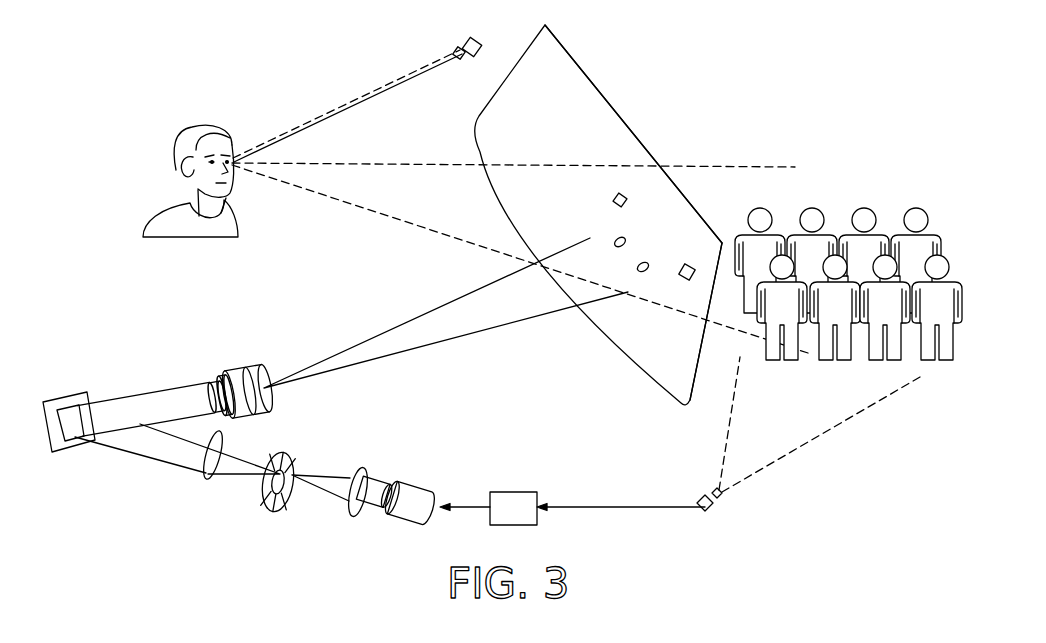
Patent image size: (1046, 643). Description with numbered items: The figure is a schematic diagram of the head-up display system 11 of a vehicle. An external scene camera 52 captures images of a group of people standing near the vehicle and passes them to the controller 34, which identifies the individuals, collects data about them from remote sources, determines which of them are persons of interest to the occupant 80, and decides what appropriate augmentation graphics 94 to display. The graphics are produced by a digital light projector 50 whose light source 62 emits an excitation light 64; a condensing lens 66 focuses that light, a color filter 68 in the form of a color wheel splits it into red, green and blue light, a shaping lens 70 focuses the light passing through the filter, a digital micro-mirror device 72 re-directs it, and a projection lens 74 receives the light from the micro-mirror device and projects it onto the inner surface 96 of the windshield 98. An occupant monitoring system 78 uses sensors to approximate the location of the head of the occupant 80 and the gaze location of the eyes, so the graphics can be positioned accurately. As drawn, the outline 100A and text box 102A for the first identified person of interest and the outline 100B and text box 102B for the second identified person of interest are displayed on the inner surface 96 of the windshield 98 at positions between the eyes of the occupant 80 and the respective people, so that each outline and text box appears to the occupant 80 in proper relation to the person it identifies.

The head-up display system 11 is at (117, 513).
The controller 34 is at (572, 508).
The digital light projector 50 is at (212, 492).
The external scene camera 52 is at (704, 494).
The light source 62 is at (418, 500).
The excitation light 64 is at (373, 492).
The condensing lens 66 is at (351, 515).
The color filter 68 is at (292, 456).
The shaping lens 70 is at (205, 478).
The digital micro-mirror device 72 is at (68, 398).
The projection lens 74 is at (233, 378).
The occupant monitoring system 78 is at (466, 42).
The occupant 80 is at (163, 207).
The appropriate augmentation graphics 94 is at (670, 237).
The inner surface 96 is at (662, 373).
The windshield 98 is at (591, 76).
The outline 100A is at (615, 238).
The outline 100B is at (643, 276).
The text box 102A is at (612, 198).
The text box 102B is at (685, 278).